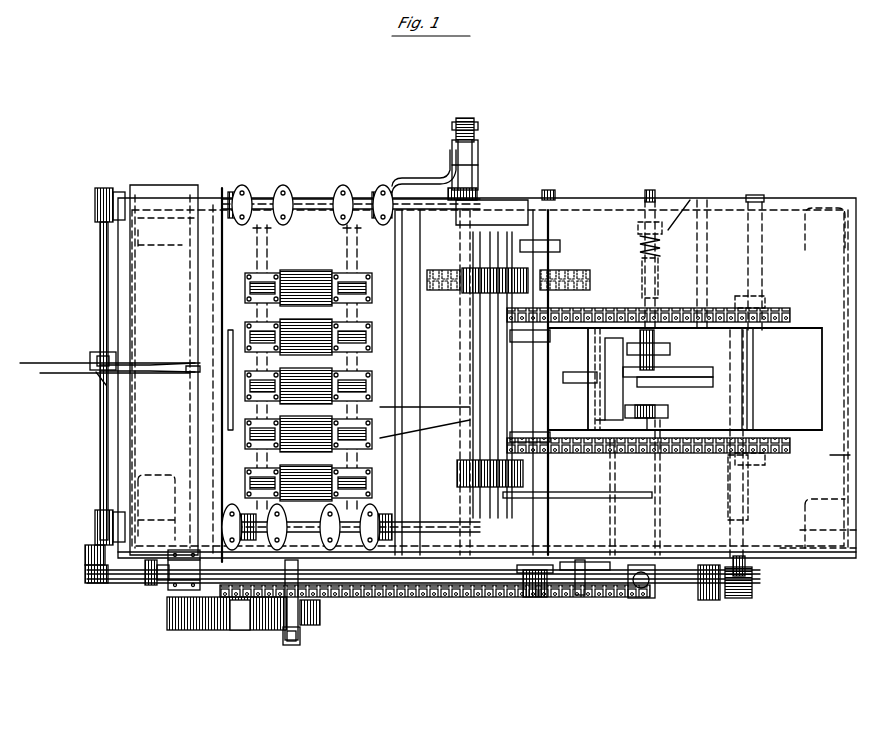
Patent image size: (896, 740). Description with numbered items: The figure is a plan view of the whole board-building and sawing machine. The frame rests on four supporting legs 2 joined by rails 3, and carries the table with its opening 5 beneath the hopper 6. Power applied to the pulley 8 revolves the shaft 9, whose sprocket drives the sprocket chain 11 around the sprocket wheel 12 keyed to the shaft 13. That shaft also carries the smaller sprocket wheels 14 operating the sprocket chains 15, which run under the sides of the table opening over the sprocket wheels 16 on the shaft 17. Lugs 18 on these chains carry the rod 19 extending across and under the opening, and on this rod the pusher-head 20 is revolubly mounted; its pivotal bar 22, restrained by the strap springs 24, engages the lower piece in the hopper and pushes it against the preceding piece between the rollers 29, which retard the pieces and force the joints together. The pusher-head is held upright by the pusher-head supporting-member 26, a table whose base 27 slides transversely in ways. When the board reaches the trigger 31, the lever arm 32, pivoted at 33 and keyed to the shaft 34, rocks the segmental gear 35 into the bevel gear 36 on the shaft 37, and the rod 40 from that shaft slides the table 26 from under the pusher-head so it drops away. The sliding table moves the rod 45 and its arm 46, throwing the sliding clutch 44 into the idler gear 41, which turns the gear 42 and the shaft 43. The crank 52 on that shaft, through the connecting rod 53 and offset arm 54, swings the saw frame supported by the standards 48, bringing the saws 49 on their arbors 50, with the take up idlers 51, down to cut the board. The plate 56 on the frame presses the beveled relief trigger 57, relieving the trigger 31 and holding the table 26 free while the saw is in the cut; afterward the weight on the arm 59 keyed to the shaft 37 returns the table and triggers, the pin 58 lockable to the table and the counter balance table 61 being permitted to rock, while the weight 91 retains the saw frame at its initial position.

The supporting legs 2 is at (172, 195).
The rails 3 is at (786, 578).
The opening in the table 5 is at (685, 379).
The hopper 6 is at (618, 498).
The pulley 8 is at (310, 626).
The shaft 9 is at (255, 565).
The sprocket chain 11 is at (445, 598).
The sprocket wheel 12 is at (598, 592).
The shaft 13 is at (552, 200).
The smaller sprocket wheels 14 is at (572, 465).
The sprocket chains 15 is at (668, 316).
The sprocket wheels 16 is at (782, 318).
The shaft 17 is at (758, 190).
The lugs 18 is at (614, 497).
The rod 19 is at (598, 420).
The pusher-head 20 is at (585, 372).
The pivotal bar 22 is at (612, 405).
The strap springs 24 is at (630, 400).
The pusher-head supporting-member 26 is at (713, 383).
The base of the table 27 is at (690, 354).
The rollers 29 is at (462, 288).
The trigger 31 is at (180, 365).
The lever arm 32 is at (90, 360).
The pivot 33 is at (96, 375).
The shaft 34 is at (98, 298).
The segmental gear 35 is at (128, 565).
The bevel gear 36 is at (148, 585).
The shaft 37 is at (684, 592).
The rod 40 is at (648, 505).
The idler gear 41 is at (565, 250).
The gear 42 is at (438, 270).
The shaft 43 is at (458, 367).
The sliding clutch 44 is at (850, 455).
The rod 45 is at (650, 190).
The arm 46 is at (630, 282).
The standards 48 is at (198, 293).
The saws 49 is at (425, 422).
The arbors 50 is at (336, 270).
The take up idlers 51 is at (318, 420).
The crank 52 is at (482, 172).
The connecting rod 53 is at (470, 118).
The offset arm 54 is at (440, 178).
The plate 56 is at (238, 322).
The relief trigger 57 is at (182, 374).
The pin 58 is at (732, 493).
The arm 59 is at (735, 550).
The counter balance table 61 is at (713, 368).
The weight 91 is at (284, 625).